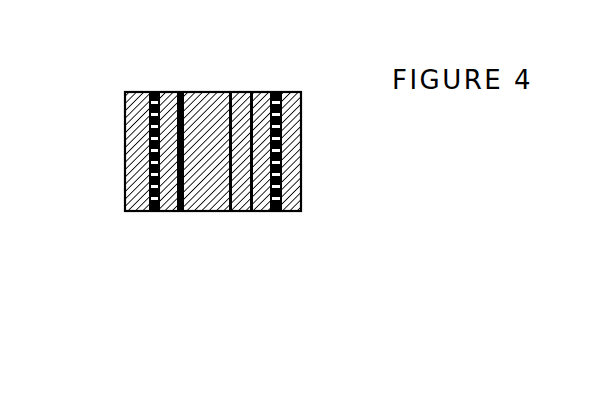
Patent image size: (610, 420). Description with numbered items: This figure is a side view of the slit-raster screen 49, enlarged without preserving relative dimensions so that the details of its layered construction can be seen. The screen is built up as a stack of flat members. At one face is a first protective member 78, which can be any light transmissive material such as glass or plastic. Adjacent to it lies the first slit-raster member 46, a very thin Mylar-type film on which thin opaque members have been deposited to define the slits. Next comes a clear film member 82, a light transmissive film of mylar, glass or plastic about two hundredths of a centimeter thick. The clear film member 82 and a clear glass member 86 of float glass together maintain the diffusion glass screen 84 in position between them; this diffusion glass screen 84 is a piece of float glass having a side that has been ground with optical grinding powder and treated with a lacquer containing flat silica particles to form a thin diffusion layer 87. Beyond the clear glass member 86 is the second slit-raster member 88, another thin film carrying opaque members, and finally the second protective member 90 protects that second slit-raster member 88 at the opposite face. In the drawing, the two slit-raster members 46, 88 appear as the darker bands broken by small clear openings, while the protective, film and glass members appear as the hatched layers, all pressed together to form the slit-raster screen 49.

The first protective member 78 is at (127, 92).
The clear film member 82 is at (181, 92).
The diffusion glass screen 84 is at (205, 92).
The clear glass member 86 is at (237, 92).
The second slit-raster member 88 is at (258, 92).
The second protective member 90 is at (287, 92).
The first slit-raster member 46 is at (160, 212).
The diffusion layer 87 is at (228, 212).
The slit-raster screen 49 is at (318, 188).